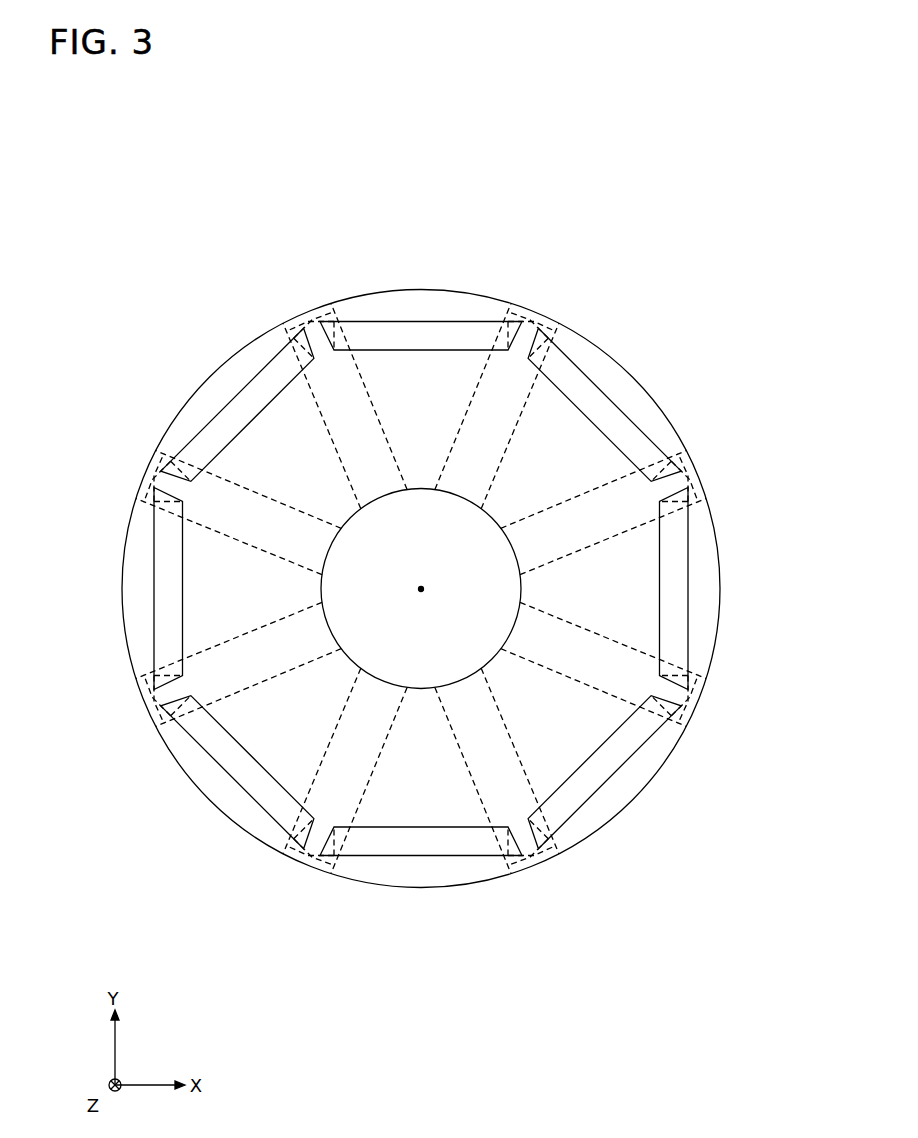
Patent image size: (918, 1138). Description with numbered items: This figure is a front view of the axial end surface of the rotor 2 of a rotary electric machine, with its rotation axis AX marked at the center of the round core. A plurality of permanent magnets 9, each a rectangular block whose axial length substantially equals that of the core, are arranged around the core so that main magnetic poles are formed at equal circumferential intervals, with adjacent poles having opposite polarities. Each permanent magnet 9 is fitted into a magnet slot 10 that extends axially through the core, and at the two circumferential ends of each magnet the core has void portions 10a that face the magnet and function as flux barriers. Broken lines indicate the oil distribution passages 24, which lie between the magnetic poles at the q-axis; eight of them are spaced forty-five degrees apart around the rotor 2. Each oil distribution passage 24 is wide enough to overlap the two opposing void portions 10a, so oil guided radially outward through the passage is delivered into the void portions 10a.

The rotor 2 is at (589, 337).
The permanent magnet 9 is at (452, 338).
The magnet slot 10 is at (405, 322).
The void portion 10a is at (306, 334).
The oil distribution passage 24 is at (310, 337).
The rotation axis AX is at (443, 589).